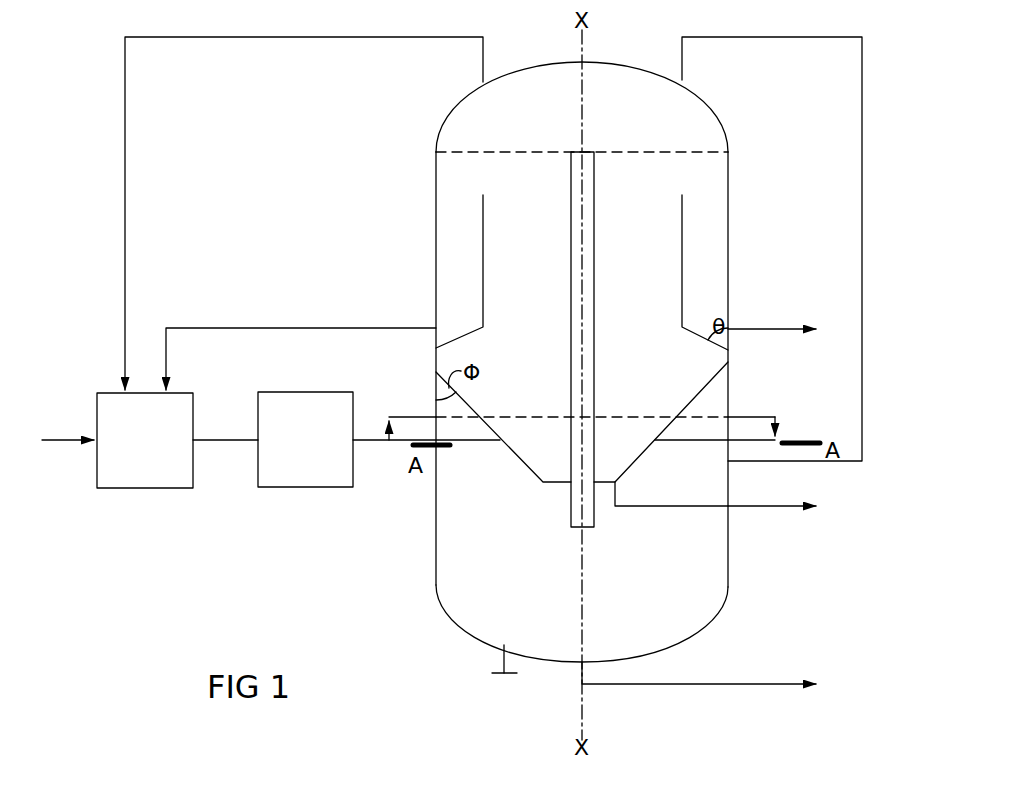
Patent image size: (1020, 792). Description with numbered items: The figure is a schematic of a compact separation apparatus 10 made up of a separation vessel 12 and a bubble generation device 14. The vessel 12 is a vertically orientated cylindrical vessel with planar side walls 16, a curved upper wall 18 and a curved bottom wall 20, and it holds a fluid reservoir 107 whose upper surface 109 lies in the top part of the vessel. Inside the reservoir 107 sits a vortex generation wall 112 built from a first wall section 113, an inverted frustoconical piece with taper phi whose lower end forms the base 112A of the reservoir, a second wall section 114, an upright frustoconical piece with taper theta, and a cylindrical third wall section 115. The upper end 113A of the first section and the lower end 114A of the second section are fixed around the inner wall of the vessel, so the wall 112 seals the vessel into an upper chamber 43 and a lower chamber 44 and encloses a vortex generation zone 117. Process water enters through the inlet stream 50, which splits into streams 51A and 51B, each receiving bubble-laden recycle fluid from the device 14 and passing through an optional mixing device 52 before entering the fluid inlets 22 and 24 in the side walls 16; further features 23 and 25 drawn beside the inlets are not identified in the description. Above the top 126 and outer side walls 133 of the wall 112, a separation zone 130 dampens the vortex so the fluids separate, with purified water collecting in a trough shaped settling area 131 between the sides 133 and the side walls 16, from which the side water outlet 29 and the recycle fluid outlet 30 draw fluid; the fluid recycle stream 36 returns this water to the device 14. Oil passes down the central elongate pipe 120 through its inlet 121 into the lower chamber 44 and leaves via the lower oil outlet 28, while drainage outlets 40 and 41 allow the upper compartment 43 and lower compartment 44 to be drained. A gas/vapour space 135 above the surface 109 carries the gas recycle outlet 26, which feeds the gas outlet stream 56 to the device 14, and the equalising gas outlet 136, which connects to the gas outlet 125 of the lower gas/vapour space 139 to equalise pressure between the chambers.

The separation apparatus 10 is at (212, 555).
The separation vessel 12 is at (407, 628).
The bubble generation device 14 is at (145, 440).
The side walls 16 is at (436, 188).
The upper wall 18 is at (538, 63).
The bottom wall 20 is at (695, 628).
The fluid inlet 22 is at (438, 437).
The inlet opening 23 is at (492, 442).
The fluid inlet 24 is at (730, 436).
The flow path 25 is at (695, 439).
The upper gas outlet 26 is at (478, 79).
The lower oil outlet 28 is at (578, 673).
The side water outlet 29 is at (740, 329).
The recycle fluid outlet 30 is at (436, 328).
The fluid recycle stream 36 is at (248, 327).
The drainage outlet 40 is at (617, 490).
The drainage outlet 41 is at (497, 658).
The upper chamber 43 is at (703, 268).
The lower chamber 44 is at (685, 590).
The inlet stream 50 is at (78, 437).
The inlet stream 51A is at (403, 441).
The inlet stream 51B is at (418, 417).
The mixing device 52 is at (273, 439).
The gas outlet stream 56 is at (252, 40).
The fluid reservoir 107 is at (637, 252).
The upper surface 109 is at (690, 118).
The vortex generation wall 112 is at (713, 397).
The base 112A is at (541, 483).
The first wall section 113 is at (523, 463).
The upper end 113A is at (436, 372).
The second wall section 114 is at (462, 337).
The lower end 114A is at (436, 350).
The third wall section 115 is at (472, 270).
The vortex generation zone 117 is at (645, 295).
The central elongate pipe 120 is at (574, 198).
The inlet 121 is at (588, 152).
The gas outlet 125 is at (732, 464).
The top 126 is at (474, 193).
The separation zone 130 is at (693, 170).
The settling area 131 is at (468, 250).
The outer side walls 133 is at (480, 221).
The gas/vapour space 135 is at (472, 120).
The equalising gas outlet 136 is at (682, 78).
The gas/vapour space 139 is at (705, 492).